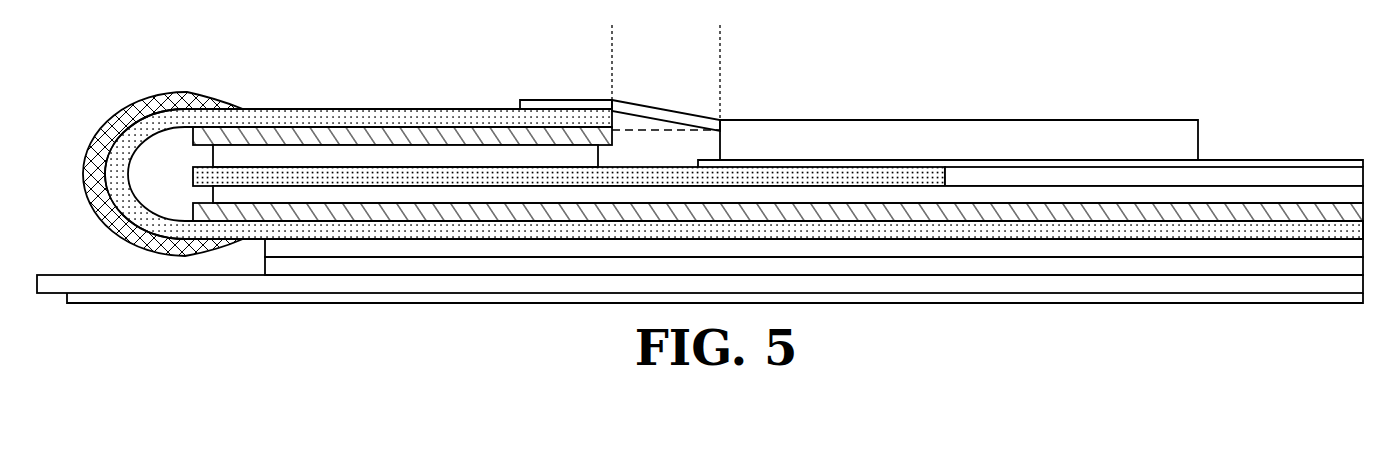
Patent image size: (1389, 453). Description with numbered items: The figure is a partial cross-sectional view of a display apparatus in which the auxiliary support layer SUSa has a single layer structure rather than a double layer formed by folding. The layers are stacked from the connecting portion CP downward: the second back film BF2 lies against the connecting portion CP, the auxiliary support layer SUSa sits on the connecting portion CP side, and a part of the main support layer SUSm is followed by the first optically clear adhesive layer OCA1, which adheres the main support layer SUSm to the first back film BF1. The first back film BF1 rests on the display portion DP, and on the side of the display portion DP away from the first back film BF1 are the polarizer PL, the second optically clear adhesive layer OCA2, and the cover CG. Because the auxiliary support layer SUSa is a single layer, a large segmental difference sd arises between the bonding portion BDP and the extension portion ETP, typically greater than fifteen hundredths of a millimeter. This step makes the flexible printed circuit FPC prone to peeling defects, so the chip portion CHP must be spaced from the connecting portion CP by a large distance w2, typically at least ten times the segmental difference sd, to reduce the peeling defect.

The connecting portion CP is at (734, 174).
The second back film BF2 is at (402, 137).
The auxiliary support layer SUSa is at (405, 157).
The main support layer SUSm is at (778, 178).
The first optically clear adhesive layer OCA1 is at (788, 196).
The first back film BF1 is at (778, 213).
The display portion DP is at (774, 231).
The polarizer PL is at (814, 250).
The second optically clear adhesive layer OCA2 is at (814, 268).
The cover CG is at (700, 286).
The bonding portion BDP is at (560, 90).
The extension portion ETP is at (671, 103).
The chip portion CHP is at (897, 113).
The flexible printed circuit FPC is at (1030, 150).
The distance w2 is at (612, 24).
The segmental difference sd is at (620, 70).